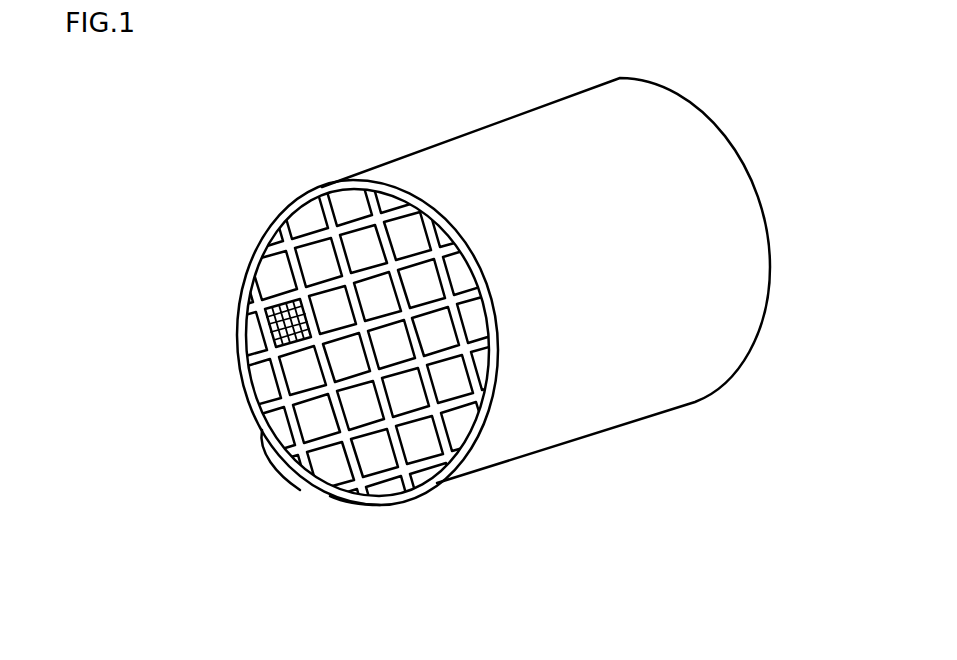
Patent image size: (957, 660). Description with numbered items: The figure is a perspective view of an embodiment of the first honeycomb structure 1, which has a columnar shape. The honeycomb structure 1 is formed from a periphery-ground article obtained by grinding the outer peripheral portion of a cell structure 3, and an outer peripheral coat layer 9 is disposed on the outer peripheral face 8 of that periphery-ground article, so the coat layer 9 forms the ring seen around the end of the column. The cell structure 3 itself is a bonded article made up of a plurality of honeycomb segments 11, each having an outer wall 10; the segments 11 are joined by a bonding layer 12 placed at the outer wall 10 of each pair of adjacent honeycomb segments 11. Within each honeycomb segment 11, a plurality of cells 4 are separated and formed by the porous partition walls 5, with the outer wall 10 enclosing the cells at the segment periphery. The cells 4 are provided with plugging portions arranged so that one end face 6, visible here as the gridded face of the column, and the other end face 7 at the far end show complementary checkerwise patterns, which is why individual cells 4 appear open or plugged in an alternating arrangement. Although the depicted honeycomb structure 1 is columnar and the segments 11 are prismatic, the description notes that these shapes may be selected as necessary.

The first honeycomb structure 1 is at (883, 233).
The cell structure 3 is at (447, 500).
The cell 4 is at (262, 347).
The partition wall 5 is at (275, 342).
The one end face 6 is at (300, 192).
The the other end face 7 is at (722, 132).
The outer peripheral face 8 is at (345, 180).
The outer peripheral coat layer 9 is at (290, 460).
The outer wall 10 is at (398, 188).
The honeycomb segment 11 is at (405, 400).
The bonding layer 12 is at (357, 497).